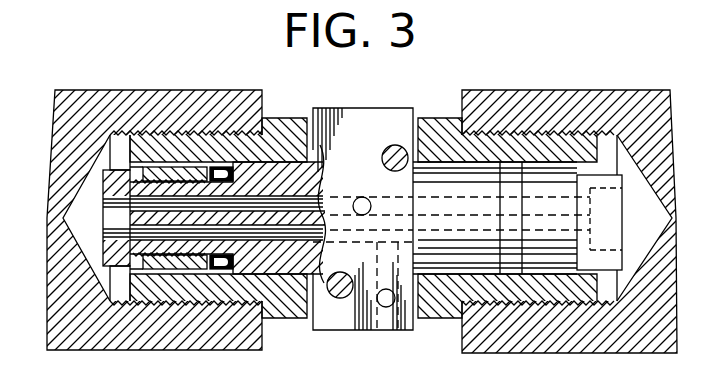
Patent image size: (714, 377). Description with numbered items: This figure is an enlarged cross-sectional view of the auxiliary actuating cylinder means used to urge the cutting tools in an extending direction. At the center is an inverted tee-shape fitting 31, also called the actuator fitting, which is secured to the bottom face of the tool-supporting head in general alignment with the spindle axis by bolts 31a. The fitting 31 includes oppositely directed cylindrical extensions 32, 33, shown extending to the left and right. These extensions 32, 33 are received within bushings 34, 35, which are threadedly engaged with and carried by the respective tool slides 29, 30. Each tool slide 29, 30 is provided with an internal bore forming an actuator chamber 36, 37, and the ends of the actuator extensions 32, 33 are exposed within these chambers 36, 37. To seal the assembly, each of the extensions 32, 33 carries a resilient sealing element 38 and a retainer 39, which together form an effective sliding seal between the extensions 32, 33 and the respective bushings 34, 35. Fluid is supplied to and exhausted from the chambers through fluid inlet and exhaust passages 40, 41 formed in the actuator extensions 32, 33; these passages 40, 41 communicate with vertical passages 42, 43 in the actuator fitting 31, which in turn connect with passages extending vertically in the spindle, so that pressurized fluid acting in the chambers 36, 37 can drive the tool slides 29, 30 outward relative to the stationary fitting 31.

The tool slide 29 is at (95, 332).
The tool slide 30 is at (560, 333).
The inverted tee-shape fitting 31 is at (353, 125).
The bolts 31a is at (393, 146).
The cylindrical extension 32 is at (278, 267).
The cylindrical extension 33 is at (438, 263).
The bushing 34 is at (218, 140).
The bushing 35 is at (555, 140).
The actuator chamber 36 is at (118, 145).
The actuator chamber 37 is at (632, 213).
The resilient sealing element 38 is at (506, 170).
The retainer 39 is at (47, 282).
The fluid inlet and exhaust passage 40 is at (312, 200).
The fluid inlet and exhaust passage 41 is at (312, 245).
The vertical passage 42 is at (362, 197).
The vertical passage 43 is at (383, 307).